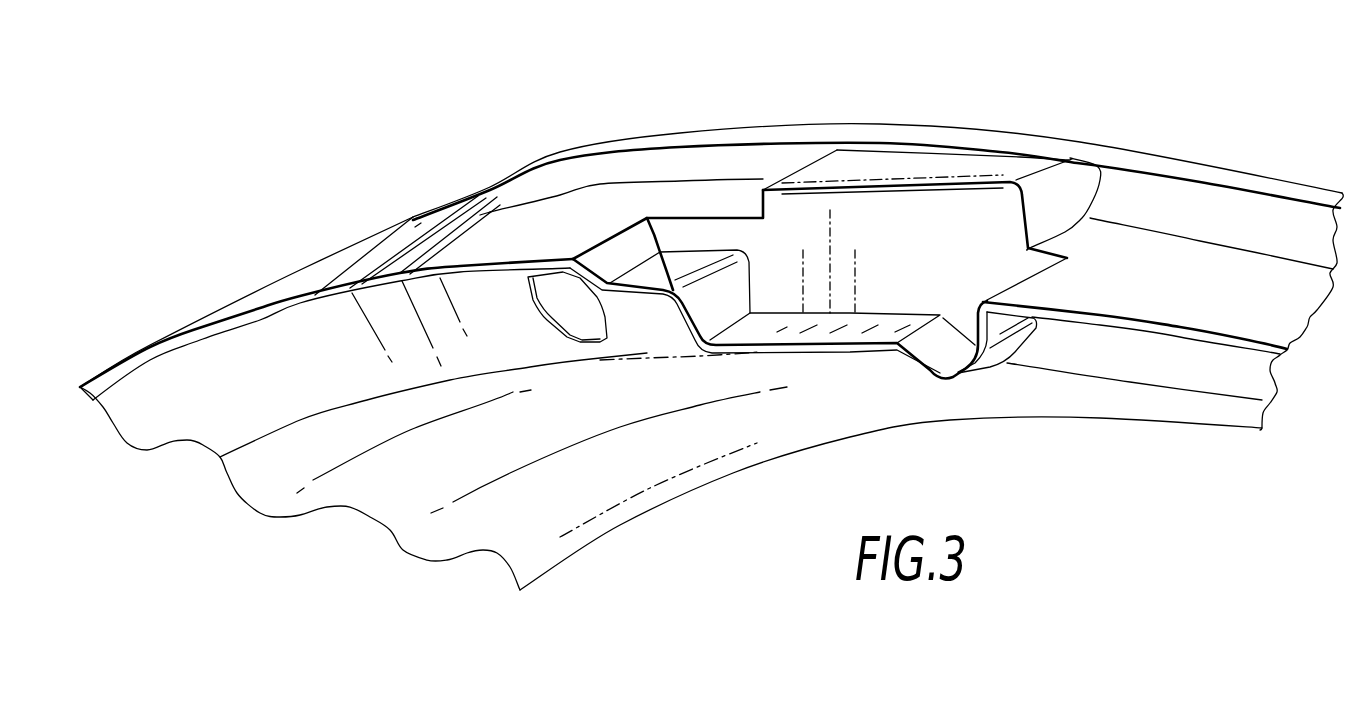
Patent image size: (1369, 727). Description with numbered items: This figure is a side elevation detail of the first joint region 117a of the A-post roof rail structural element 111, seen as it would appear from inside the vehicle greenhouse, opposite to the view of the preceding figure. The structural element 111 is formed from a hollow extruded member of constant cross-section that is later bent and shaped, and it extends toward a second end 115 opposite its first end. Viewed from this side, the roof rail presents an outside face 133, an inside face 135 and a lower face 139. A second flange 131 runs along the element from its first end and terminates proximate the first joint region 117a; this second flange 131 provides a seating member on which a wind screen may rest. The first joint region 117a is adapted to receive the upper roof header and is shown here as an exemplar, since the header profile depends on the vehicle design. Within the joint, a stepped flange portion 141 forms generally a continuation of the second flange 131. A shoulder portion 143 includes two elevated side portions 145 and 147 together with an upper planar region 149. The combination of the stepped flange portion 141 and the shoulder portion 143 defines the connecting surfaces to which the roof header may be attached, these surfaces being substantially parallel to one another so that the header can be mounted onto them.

The structural element 111 is at (392, 177).
The second end 115 is at (510, 183).
The first joint region 117a is at (950, 101).
The second flange 131 is at (1150, 317).
The outside face 133 is at (1297, 187).
The inside face 135 is at (385, 328).
The lower face 139 is at (1157, 163).
The stepped flange portion 141 is at (820, 343).
The shoulder portion 143 is at (818, 203).
The elevated side portion 145 is at (780, 177).
The elevated side portion 147 is at (1070, 160).
The upper planar region 149 is at (860, 157).